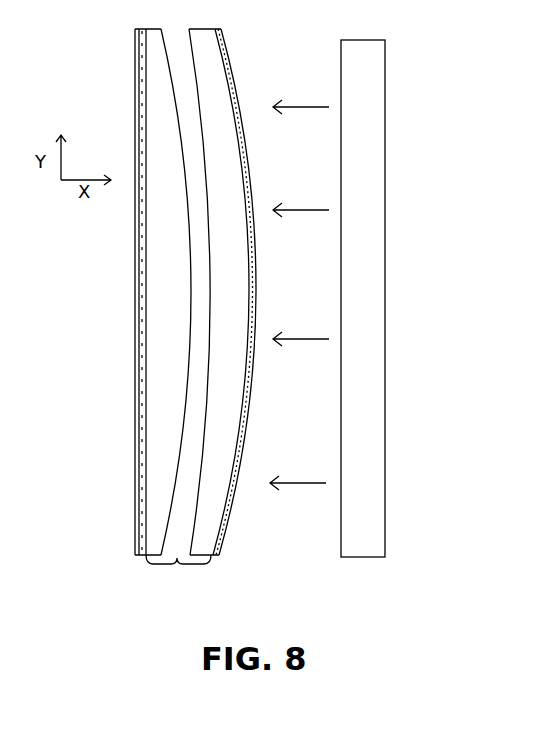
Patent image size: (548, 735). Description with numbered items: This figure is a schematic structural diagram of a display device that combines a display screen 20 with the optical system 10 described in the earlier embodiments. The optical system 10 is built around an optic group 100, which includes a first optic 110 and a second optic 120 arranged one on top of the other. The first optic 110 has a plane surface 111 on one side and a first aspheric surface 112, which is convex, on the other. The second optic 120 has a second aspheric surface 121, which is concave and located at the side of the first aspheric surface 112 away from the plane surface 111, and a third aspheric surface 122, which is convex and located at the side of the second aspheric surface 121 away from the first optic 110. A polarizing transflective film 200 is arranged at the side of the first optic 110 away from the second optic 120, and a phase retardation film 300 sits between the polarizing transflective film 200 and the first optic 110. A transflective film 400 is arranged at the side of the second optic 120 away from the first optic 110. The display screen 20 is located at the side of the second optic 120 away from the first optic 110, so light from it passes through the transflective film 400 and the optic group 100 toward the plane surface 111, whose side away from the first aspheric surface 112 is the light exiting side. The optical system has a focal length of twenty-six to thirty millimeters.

The optical system 10 is at (162, 106).
The display screen 20 is at (358, 180).
The optic group 100 is at (143, 320).
The first optic 110 is at (111, 292).
The plane surface 111 is at (143, 450).
The first aspheric surface 112 is at (182, 432).
The second optic 120 is at (143, 292).
The second aspheric surface 121 is at (205, 417).
The third aspheric surface 122 is at (243, 403).
The polarizing transflective film 200 is at (137, 322).
The phase retardation film 300 is at (143, 303).
The transflective film 400 is at (250, 326).